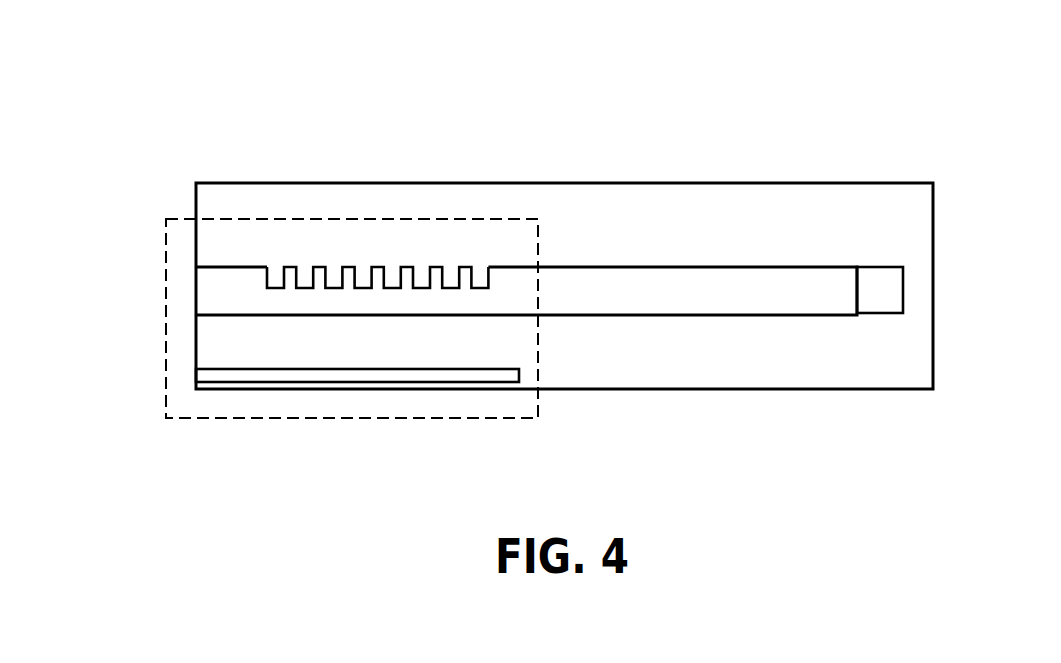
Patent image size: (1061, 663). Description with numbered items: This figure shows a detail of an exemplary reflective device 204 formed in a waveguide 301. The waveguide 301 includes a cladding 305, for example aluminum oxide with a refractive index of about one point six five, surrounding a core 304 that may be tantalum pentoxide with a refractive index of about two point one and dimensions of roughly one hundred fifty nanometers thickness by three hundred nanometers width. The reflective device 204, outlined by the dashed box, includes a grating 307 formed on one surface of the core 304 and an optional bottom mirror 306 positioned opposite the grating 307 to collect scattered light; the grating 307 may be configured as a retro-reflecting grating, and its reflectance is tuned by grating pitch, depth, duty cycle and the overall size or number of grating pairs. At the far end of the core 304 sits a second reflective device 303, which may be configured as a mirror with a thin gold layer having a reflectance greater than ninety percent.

The waveguide 301 is at (503, 80).
The cladding 305 is at (739, 172).
The core 304 is at (714, 265).
The grating 307 is at (472, 267).
The reflective device 303 is at (885, 260).
The mirror 306 is at (505, 368).
The reflective device 204 is at (369, 435).